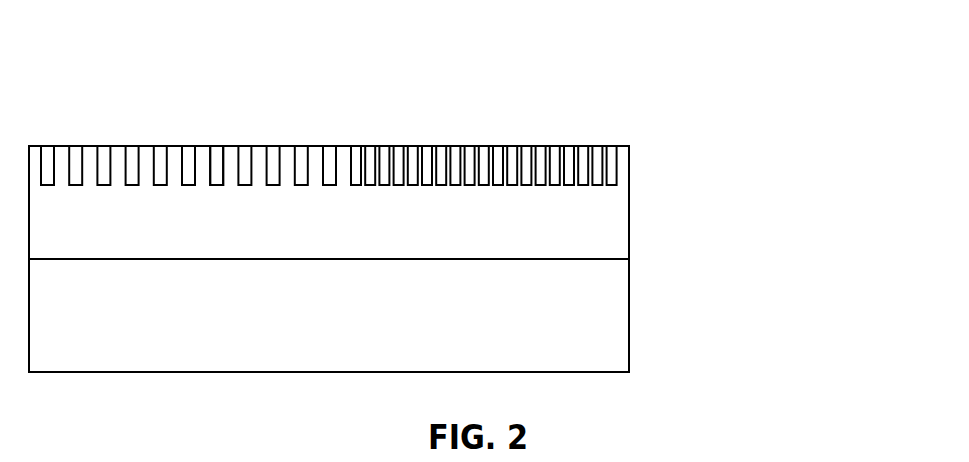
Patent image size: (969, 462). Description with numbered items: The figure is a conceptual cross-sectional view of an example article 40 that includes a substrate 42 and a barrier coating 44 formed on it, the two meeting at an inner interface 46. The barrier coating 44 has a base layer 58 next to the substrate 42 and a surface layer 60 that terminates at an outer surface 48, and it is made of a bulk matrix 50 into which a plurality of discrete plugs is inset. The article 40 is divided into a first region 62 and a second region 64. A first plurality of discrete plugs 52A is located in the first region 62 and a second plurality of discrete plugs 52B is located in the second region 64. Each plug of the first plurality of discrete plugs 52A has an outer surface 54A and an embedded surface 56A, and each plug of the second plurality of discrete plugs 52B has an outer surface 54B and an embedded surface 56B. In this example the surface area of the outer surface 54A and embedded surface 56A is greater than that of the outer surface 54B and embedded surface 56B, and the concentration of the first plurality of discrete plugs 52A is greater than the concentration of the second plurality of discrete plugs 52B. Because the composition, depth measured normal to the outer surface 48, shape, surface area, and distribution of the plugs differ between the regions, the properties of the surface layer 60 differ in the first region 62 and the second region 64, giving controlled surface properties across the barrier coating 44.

The article 40 is at (752, 38).
The substrate 42 is at (647, 258).
The barrier coating 44 is at (722, 147).
The inner interface 46 is at (487, 258).
The outer surface 48 is at (38, 146).
The bulk matrix 50 is at (559, 156).
The first plurality of discrete plugs 52A is at (301, 156).
The second plurality of discrete plugs 52B is at (628, 146).
The outer surface 54A is at (217, 146).
The outer surface 54B is at (484, 146).
The embedded surface 56A is at (112, 146).
The embedded surface 56B is at (397, 146).
The base layer 58 is at (647, 185).
The surface layer 60 is at (647, 145).
The first region 62 is at (43, 109).
The second region 64 is at (625, 109).